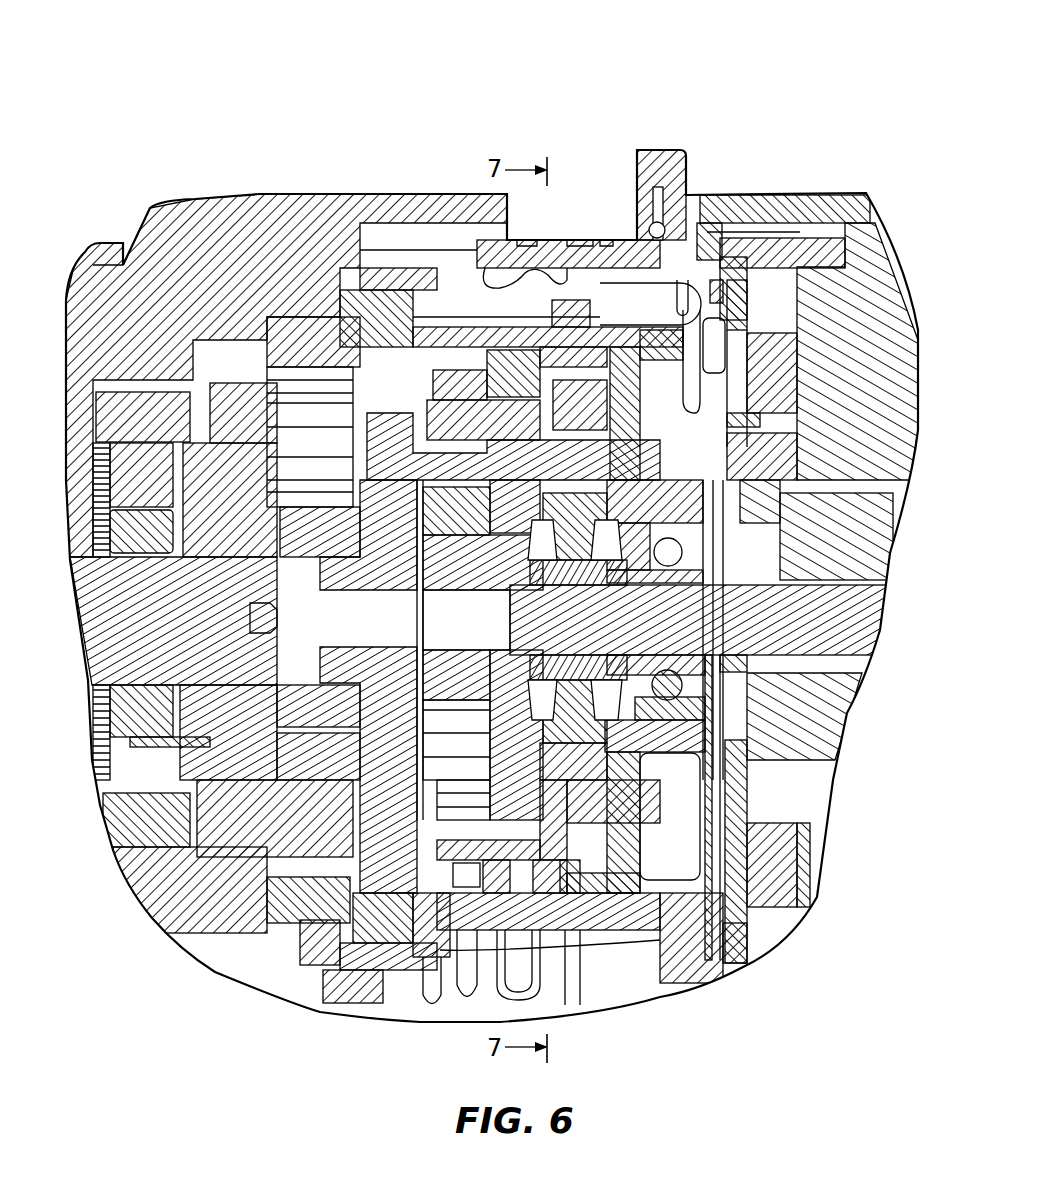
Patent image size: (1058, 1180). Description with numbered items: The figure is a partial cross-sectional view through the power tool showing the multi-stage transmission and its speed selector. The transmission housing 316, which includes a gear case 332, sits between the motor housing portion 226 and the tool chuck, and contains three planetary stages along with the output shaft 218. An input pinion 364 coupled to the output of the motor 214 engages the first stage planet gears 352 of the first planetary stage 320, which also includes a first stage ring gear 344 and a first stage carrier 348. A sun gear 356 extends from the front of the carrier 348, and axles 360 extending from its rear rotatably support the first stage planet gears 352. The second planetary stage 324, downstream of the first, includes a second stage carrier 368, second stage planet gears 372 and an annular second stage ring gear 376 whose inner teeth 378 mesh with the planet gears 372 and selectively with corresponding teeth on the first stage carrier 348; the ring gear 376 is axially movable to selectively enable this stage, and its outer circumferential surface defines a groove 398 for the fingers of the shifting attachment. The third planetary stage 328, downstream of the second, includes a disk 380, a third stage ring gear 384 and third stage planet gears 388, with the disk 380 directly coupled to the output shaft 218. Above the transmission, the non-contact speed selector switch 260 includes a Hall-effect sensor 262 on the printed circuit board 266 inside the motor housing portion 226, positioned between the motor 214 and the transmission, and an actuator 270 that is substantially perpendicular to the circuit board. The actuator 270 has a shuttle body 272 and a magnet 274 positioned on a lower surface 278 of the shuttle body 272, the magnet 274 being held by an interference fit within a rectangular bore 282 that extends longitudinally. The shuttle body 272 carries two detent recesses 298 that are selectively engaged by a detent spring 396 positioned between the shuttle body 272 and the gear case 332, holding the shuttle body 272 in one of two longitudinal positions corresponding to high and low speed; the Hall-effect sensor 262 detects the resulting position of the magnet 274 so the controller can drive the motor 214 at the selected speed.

The motor 214 is at (843, 625).
The output shaft 218 is at (145, 735).
The motor housing portion 226 is at (775, 196).
The non-contact speed selector switch 260 is at (720, 168).
The Hall-effect sensor 262 is at (662, 367).
The printed circuit board 266 is at (762, 275).
The actuator 270 is at (645, 150).
The shuttle body 272 is at (455, 235).
The magnet 274 is at (705, 222).
The lower surface 278 is at (505, 240).
The rectangular bore 282 is at (640, 190).
The detent recesses 298 is at (453, 370).
The transmission housing 316 is at (370, 207).
The first planetary stage 320 is at (600, 975).
The second planetary stage 324 is at (400, 895).
The third planetary stage 328 is at (392, 798).
The gear case 332 is at (475, 930).
The first stage ring gear 344 is at (665, 970).
The first stage carrier 348 is at (693, 830).
The first stage planet gears 352 is at (700, 330).
The sun gear 356 is at (488, 627).
The axles 360 is at (575, 395).
The input pinion 364 is at (660, 548).
The second stage carrier 368 is at (350, 835).
The second stage planet gears 372 is at (457, 800).
The second stage ring gear 376 is at (420, 200).
The teeth 378 is at (515, 805).
The disk 380 is at (253, 393).
The third stage ring gear 384 is at (300, 340).
The third stage planet gears 388 is at (233, 413).
The detent spring 396 is at (525, 277).
The groove 398 is at (540, 830).